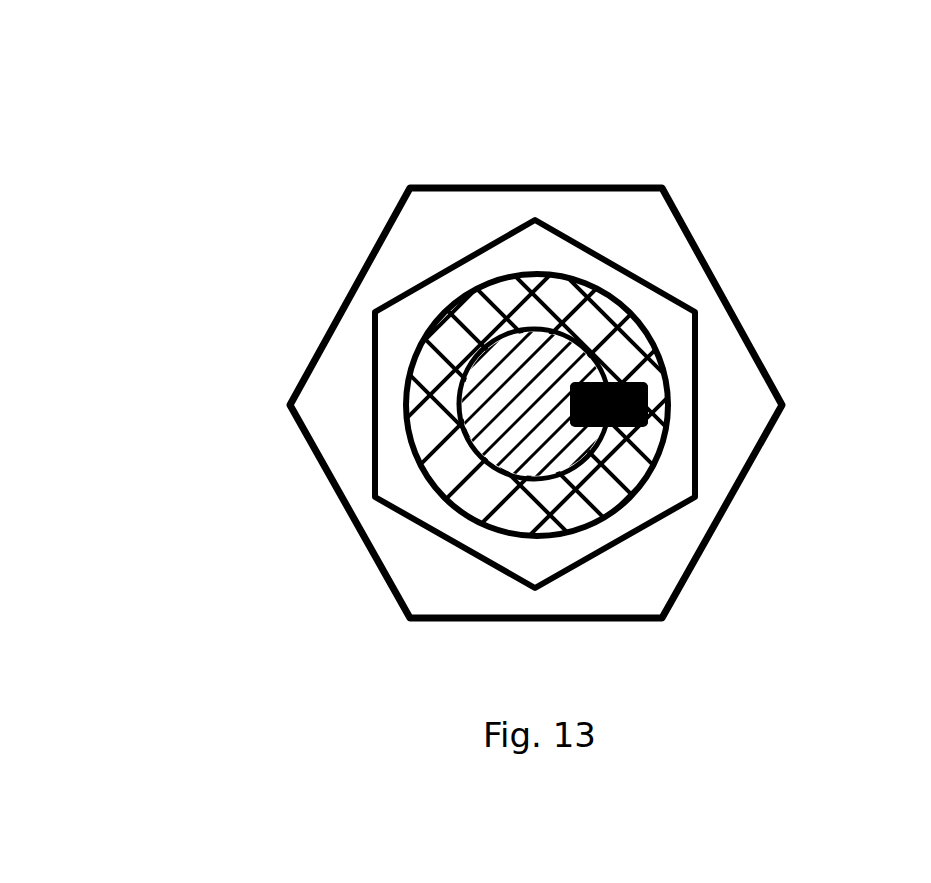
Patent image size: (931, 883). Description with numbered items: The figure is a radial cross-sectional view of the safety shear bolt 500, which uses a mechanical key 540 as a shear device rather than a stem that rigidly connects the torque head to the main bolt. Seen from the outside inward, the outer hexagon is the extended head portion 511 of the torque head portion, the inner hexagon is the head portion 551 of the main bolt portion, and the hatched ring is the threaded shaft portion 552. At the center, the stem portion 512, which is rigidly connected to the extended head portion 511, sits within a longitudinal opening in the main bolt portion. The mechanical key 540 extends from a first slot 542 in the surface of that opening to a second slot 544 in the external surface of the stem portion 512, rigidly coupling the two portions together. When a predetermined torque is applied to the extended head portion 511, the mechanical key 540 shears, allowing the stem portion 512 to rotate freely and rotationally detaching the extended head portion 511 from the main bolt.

The safety shear bolt 500 is at (140, 80).
The extended head portion 511 is at (453, 626).
The head portion 551 is at (660, 521).
The shaft portion 552 is at (586, 328).
The stem portion 512 is at (520, 380).
The mechanical key 540 is at (632, 379).
The first slot 542 is at (652, 405).
The second slot 544 is at (566, 405).